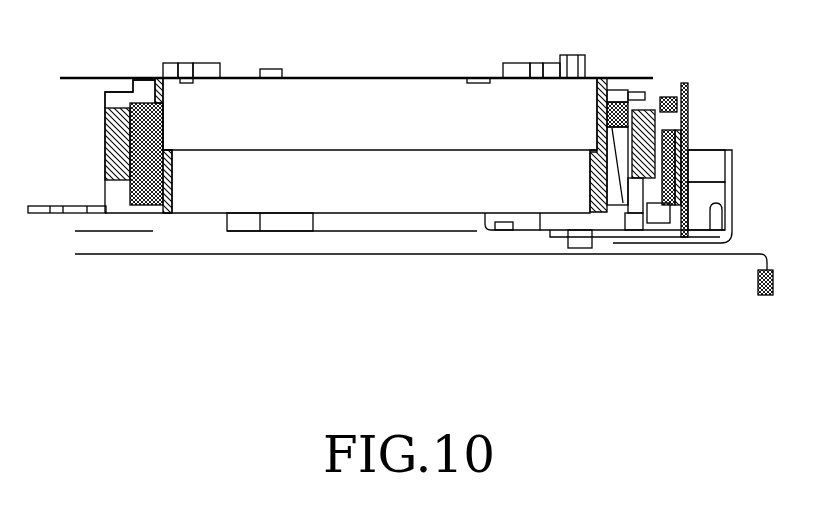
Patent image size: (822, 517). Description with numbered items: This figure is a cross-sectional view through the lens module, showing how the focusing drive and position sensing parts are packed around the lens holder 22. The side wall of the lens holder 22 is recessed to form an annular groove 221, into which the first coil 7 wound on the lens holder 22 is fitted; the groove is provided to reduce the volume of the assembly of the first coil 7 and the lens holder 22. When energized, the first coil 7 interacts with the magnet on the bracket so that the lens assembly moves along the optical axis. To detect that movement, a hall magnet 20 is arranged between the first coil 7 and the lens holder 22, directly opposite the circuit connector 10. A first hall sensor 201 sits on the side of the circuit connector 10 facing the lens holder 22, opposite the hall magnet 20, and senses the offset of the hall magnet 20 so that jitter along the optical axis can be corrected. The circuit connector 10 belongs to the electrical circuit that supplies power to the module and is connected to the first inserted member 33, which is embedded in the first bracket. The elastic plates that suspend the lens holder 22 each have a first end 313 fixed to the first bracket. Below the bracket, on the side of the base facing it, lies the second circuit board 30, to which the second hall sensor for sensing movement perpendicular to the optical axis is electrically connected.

The first coil 7 is at (108, 147).
The circuit connector 10 is at (688, 95).
The hall magnet 20 is at (626, 102).
The lens holder 22 is at (115, 192).
The second circuit board 30 is at (768, 258).
The first inserted member 33 is at (518, 232).
The first hall sensor 201 is at (678, 143).
The annular groove 221 is at (106, 108).
The first end 313 is at (443, 231).